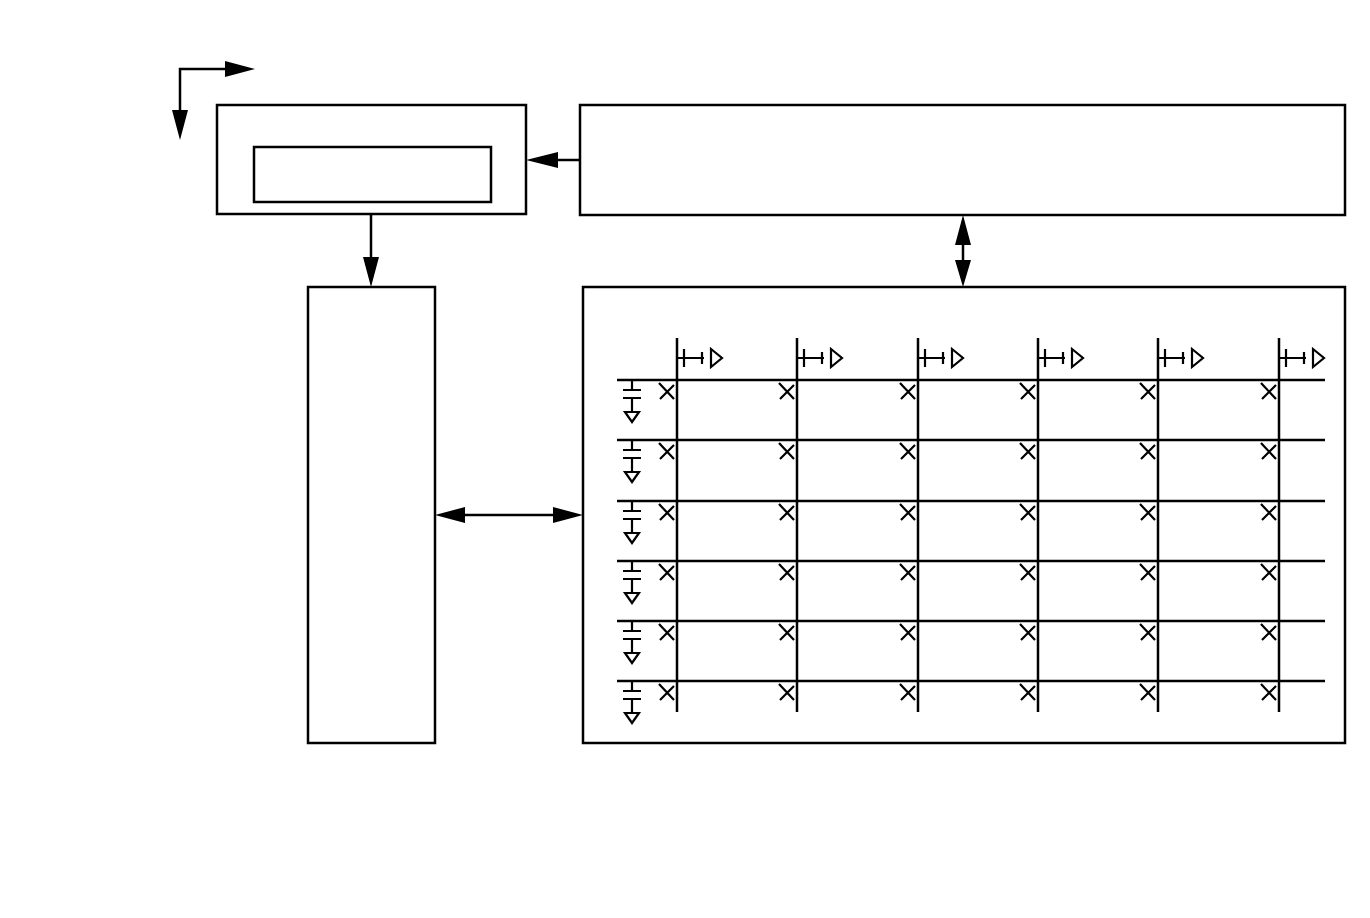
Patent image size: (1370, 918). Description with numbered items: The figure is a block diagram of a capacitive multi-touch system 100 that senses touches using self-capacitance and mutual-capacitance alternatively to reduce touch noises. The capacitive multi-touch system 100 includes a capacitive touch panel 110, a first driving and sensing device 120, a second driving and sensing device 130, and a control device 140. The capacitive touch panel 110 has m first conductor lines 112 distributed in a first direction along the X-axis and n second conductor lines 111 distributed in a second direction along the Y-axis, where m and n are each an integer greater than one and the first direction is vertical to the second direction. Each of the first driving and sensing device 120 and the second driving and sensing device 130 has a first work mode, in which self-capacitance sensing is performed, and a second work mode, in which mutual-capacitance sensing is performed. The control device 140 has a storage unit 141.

The capacitive multi-touch system 100 is at (758, 436).
The capacitive touch panel 110 is at (697, 287).
The second conductor lines 111 is at (899, 516).
The first conductor lines 112 is at (1279, 338).
The first driving and sensing device 120 is at (437, 577).
The second driving and sensing device 130 is at (1107, 215).
The control device 140 is at (343, 214).
The storage unit 141 is at (373, 202).